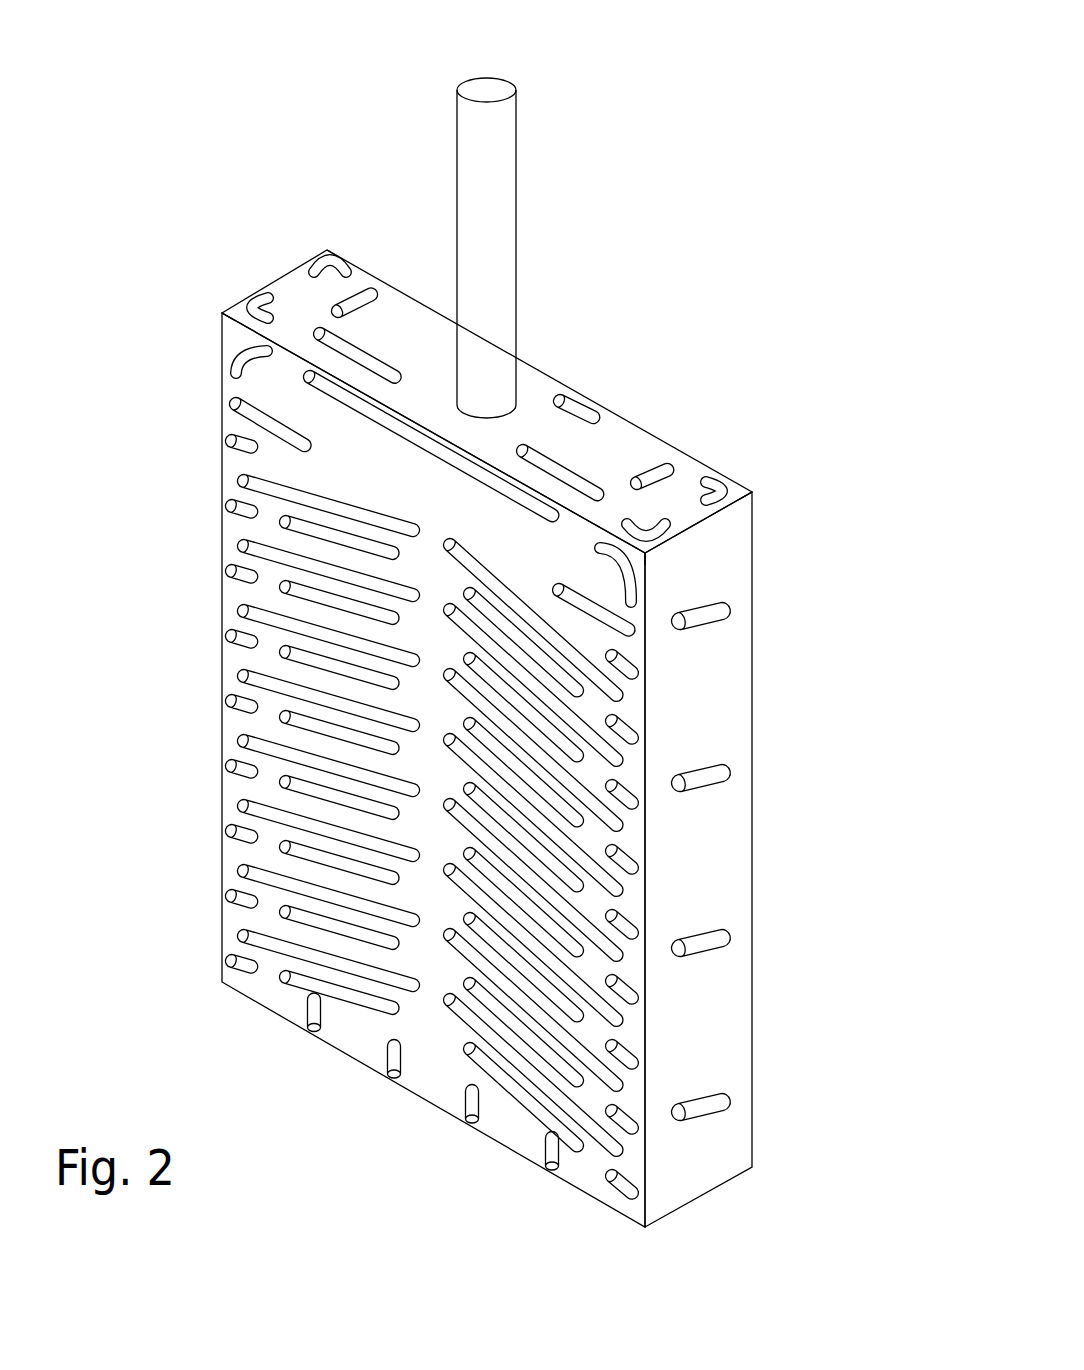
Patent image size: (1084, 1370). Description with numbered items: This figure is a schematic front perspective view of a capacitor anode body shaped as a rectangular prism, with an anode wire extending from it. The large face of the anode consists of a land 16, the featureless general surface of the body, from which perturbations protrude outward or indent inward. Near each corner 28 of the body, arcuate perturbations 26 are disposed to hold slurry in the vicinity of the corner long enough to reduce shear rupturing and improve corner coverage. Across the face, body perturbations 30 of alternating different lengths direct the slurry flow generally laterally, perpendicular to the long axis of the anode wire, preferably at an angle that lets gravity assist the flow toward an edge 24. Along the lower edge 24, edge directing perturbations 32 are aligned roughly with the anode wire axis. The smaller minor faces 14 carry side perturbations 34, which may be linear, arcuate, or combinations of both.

The minor face 14 is at (677, 498).
The land 16 is at (440, 515).
The edge 24 is at (413, 420).
The arcuate perturbations 26 is at (325, 258).
The corner 28 is at (330, 248).
The body perturbations 30 is at (292, 717).
The edge directing perturbations 32 is at (392, 1063).
The side perturbations 34 is at (577, 482).